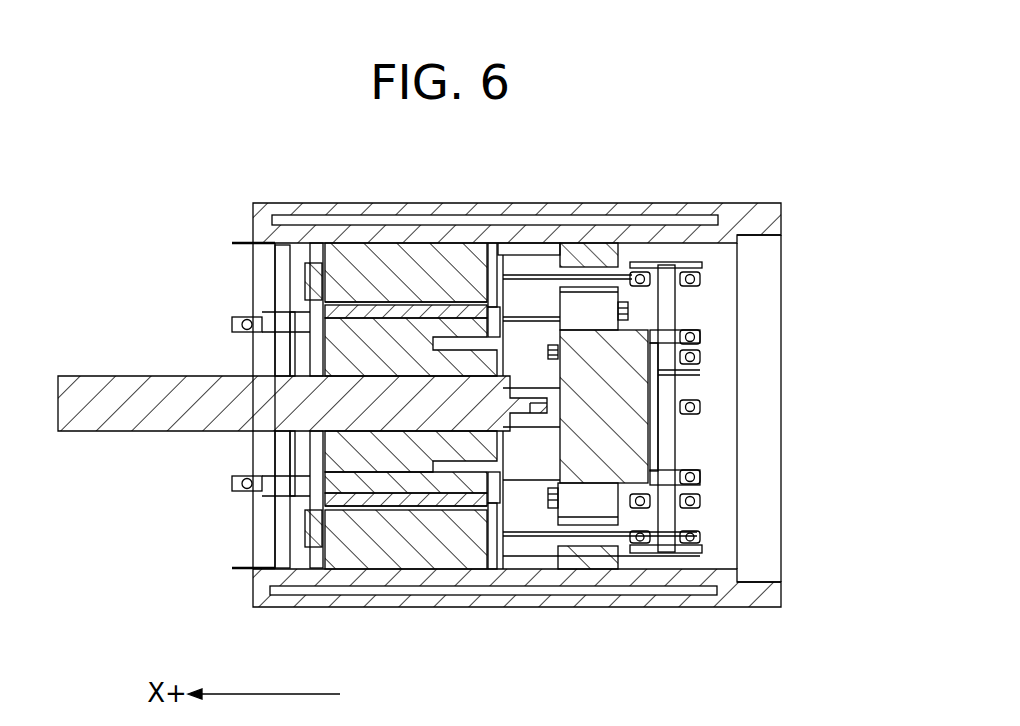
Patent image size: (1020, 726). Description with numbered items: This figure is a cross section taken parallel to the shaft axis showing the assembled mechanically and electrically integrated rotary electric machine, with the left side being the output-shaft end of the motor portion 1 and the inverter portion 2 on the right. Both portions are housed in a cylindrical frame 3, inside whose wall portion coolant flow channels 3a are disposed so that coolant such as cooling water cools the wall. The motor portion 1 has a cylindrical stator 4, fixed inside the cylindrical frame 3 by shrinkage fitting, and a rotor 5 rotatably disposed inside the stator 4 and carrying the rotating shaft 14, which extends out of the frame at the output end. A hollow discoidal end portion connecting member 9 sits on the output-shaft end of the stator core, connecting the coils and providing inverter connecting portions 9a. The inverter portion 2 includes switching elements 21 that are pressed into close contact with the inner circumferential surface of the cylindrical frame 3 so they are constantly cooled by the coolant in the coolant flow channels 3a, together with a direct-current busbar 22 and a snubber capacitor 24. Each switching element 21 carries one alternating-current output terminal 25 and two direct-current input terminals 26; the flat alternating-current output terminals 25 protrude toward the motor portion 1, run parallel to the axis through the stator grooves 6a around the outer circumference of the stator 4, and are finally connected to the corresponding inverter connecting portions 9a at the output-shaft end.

The motor portion 1 is at (238, 282).
The inverter portion 2 is at (688, 318).
The cylindrical frame 3 is at (688, 600).
The coolant flow channels 3a is at (442, 588).
The stator 4 is at (445, 258).
The rotor 5 is at (373, 345).
The stator grooves 6a is at (348, 560).
The end portion connecting member 9 is at (252, 525).
The inverter connecting portion 9a is at (250, 568).
The rotating shaft 14 is at (103, 431).
The switching elements 21 is at (598, 562).
The direct-current busbar 22 is at (668, 448).
The snubber capacitor 24 is at (618, 375).
The alternating-current output terminal 25 is at (527, 569).
The direct-current input terminals 26 is at (690, 462).